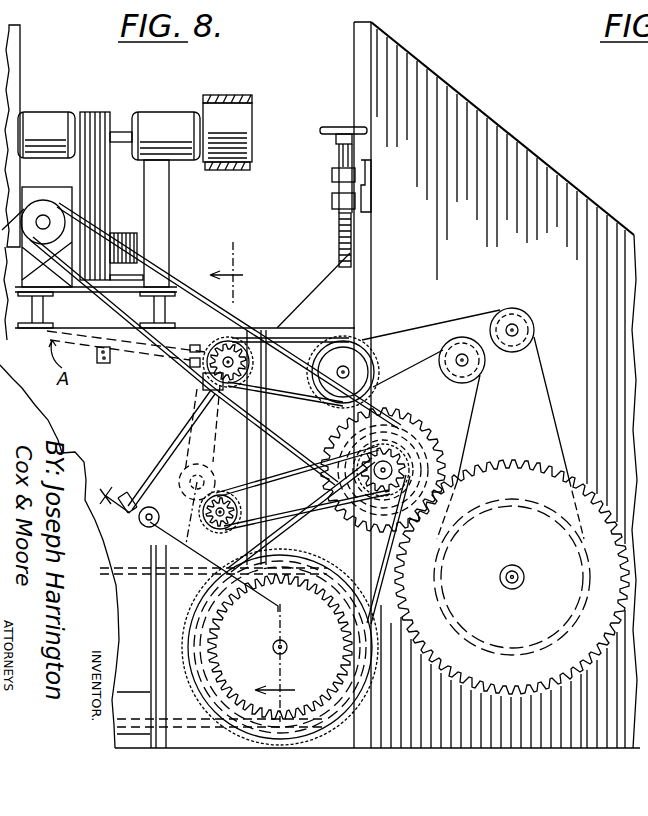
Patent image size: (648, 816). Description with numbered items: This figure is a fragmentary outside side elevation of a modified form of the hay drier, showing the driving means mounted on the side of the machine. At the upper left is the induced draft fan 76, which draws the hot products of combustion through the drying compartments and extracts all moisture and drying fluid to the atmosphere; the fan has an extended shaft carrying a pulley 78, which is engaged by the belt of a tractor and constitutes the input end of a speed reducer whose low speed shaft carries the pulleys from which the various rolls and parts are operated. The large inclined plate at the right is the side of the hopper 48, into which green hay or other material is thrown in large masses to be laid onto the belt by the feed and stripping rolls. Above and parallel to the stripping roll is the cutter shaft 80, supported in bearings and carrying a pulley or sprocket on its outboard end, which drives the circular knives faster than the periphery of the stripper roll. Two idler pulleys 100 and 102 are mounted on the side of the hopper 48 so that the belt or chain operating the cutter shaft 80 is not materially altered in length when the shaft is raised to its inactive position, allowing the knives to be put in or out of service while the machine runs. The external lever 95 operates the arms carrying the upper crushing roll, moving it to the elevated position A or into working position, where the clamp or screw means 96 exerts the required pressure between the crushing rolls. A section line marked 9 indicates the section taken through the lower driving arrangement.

The induced draft fan 76 is at (15, 61).
The pulley 78 is at (245, 95).
The hopper 48 is at (493, 148).
The shaft 80 is at (346, 370).
The idler pulley 100 is at (463, 342).
The idler pulley 102 is at (519, 309).
The external lever 95 is at (180, 419).
The clamp or screw means 96 is at (124, 489).
The section line 9- 9 is at (258, 482).